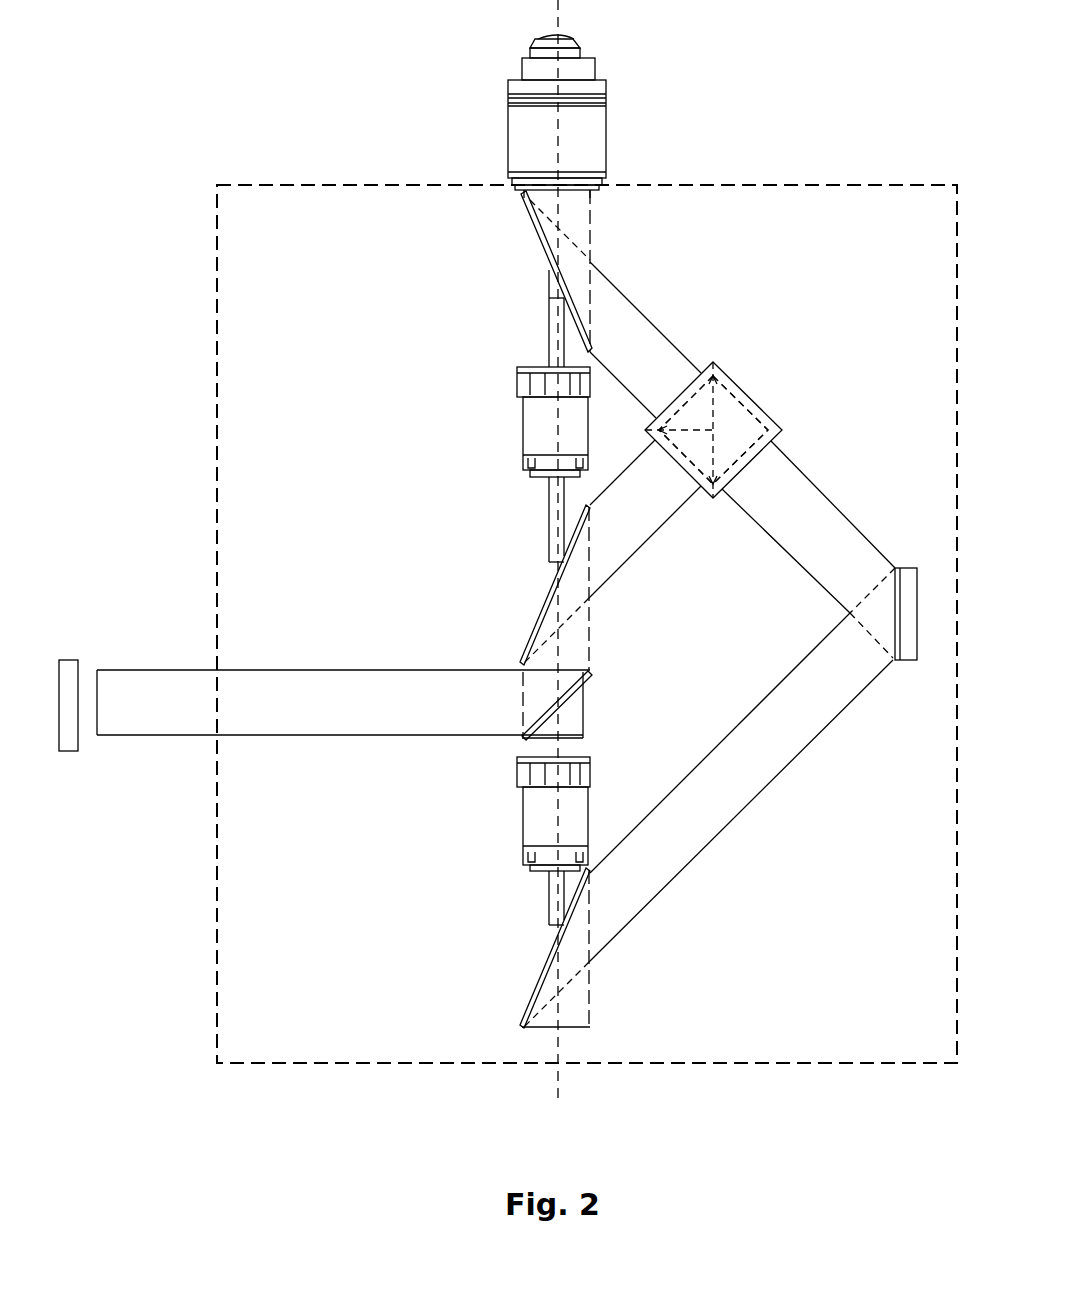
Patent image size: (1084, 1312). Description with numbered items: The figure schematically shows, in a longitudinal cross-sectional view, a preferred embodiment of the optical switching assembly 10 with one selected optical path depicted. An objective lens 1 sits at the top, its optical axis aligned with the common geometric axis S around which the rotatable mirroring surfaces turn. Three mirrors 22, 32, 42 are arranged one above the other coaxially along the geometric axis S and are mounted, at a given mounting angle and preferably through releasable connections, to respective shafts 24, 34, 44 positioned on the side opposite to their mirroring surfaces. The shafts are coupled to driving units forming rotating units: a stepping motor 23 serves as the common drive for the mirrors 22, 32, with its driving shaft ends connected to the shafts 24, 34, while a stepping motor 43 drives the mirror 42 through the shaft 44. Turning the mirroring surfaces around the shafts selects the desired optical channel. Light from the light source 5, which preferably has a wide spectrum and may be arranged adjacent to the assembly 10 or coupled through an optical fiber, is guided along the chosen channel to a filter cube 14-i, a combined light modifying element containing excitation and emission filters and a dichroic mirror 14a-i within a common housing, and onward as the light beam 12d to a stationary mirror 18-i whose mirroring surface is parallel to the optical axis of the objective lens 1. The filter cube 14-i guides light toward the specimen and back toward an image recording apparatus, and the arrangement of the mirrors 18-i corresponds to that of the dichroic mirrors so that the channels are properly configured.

The common geometric axis S is at (558, 14).
The objective lens 1 is at (598, 130).
The optical switching assembly 10 is at (848, 186).
The mirror 22 is at (546, 236).
The shaft 24 is at (552, 340).
The stepping motor 23 is at (522, 424).
The shaft 34 is at (550, 520).
The filter cube 14-i is at (774, 412).
The dichroic mirror 14a-i is at (715, 410).
The light beam 12d is at (828, 512).
The mirror 18-i is at (904, 690).
The mirror 32 is at (532, 612).
The light source 5 is at (72, 660).
The stepping motor 43 is at (522, 816).
The shaft 44 is at (552, 894).
The mirror 42 is at (532, 976).